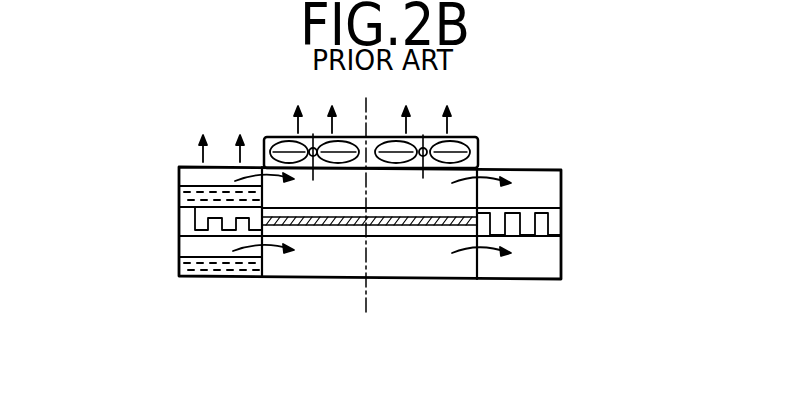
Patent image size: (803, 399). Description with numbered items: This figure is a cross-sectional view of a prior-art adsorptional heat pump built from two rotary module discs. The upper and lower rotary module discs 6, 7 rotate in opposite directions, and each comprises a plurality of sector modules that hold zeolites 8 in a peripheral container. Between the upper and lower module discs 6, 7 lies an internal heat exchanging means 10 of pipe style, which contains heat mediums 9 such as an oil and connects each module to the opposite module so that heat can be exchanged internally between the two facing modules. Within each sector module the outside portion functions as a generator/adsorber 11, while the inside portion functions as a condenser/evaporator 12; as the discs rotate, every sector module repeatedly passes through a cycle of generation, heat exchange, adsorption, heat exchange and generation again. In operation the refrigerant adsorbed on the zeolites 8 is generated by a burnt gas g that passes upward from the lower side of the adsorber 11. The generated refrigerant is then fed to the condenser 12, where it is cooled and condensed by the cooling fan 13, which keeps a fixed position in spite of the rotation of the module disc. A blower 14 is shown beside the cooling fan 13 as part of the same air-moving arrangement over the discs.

The upper rotary module disc 6 is at (185, 185).
The lower rotary module disc 7 is at (193, 245).
The zeolites 8 is at (187, 196).
The heat mediums 9 is at (190, 218).
The internal heat exchanging means 10 is at (335, 223).
The generator/adsorber 11 is at (195, 177).
The condenser/evaporator 12 is at (300, 197).
The cooling fan 13 is at (337, 142).
The blower 14 is at (445, 152).
The burnt gas g is at (325, 114).